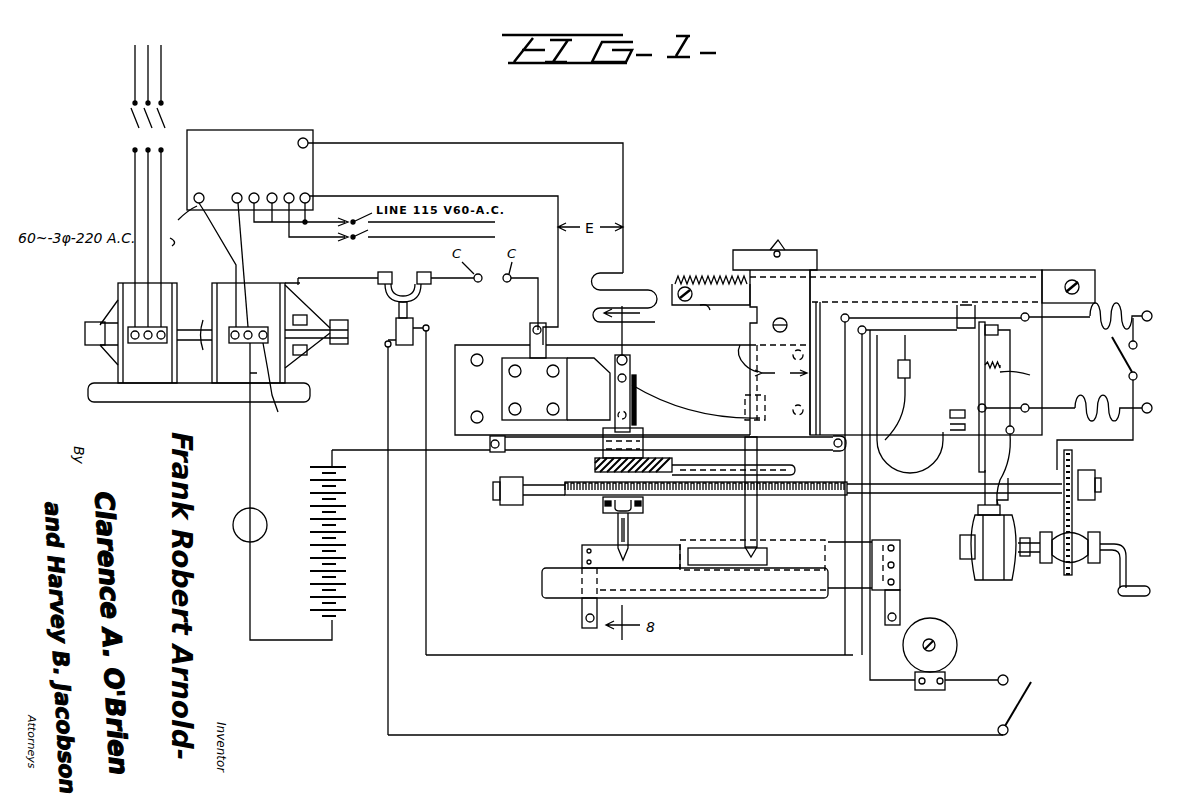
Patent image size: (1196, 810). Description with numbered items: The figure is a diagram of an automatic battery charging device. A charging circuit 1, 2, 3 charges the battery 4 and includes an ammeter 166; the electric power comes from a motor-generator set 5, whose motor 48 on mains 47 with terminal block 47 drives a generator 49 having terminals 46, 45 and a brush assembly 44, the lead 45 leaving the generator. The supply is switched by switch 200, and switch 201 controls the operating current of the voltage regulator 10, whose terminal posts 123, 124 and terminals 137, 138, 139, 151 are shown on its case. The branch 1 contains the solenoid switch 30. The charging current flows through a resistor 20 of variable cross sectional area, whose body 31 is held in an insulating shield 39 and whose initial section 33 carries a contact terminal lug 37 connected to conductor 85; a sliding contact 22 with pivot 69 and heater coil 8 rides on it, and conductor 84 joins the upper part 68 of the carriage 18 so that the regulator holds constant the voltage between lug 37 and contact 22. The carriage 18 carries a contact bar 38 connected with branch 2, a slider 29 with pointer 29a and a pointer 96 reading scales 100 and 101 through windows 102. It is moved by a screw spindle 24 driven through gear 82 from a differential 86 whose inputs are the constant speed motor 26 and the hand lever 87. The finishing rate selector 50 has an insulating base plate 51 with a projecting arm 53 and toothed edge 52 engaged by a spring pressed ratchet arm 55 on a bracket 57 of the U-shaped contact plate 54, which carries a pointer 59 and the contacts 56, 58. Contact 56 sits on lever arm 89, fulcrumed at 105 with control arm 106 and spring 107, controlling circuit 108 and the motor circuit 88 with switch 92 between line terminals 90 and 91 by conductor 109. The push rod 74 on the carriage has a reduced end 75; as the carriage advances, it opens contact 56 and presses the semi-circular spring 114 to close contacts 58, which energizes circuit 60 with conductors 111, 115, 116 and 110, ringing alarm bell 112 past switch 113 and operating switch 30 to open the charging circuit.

The charging circuit branch 1 is at (338, 272).
The charging circuit branch 2 is at (437, 450).
The charging circuit branch 3 is at (250, 500).
The battery 4 is at (345, 552).
The means for furnishing electric power 5 is at (212, 407).
The heating coil 8 is at (625, 314).
The voltage regulator 10 is at (238, 130).
The carriage 18 is at (585, 470).
The resistor with variable cross sectional area 20 is at (659, 393).
The sliding contact 22 is at (637, 378).
The screw spindle 24 is at (700, 497).
The synchronous or constant speed motor 26 is at (988, 578).
The slider 29 is at (600, 512).
The pointer 29a is at (614, 523).
The solenoid switch 30 is at (420, 307).
The variable area resistor 31 is at (668, 416).
The resistor section 33 is at (502, 392).
The contact terminal lug 37 is at (530, 338).
The contact bar 38 is at (495, 470).
The shield 39 is at (462, 350).
The generator brush assembly 44 is at (266, 300).
The terminal 45 is at (276, 388).
The terminal 46 is at (245, 346).
The mains 47 is at (152, 265).
The motor 48 is at (118, 283).
The generator 49 is at (225, 283).
The finishing rate selector 50 is at (866, 260).
The insulating base plate 51 is at (965, 285).
The toothed edge 52 is at (702, 280).
The projecting arm 53 is at (694, 320).
The U-shaped metal contact plate 54 is at (740, 345).
The spring pressed ratchet arm 55 is at (750, 250).
The contact 56 is at (978, 338).
The bracket 57 is at (784, 248).
The contacts 58 is at (950, 414).
The pointer 59 is at (760, 508).
The indicator or switching off circuit 60 is at (866, 732).
The upper part of the carriage 68 is at (628, 355).
The pivot 69 is at (615, 355).
The contact operating rod 74 is at (730, 497).
The reduced end portion 75 is at (790, 456).
The gear 82 is at (1075, 465).
The conductor 84 is at (625, 190).
The conductor 85 is at (452, 195).
The differential 86 is at (1058, 565).
The hand lever 87 is at (1128, 550).
The operative circuit of the motor 88 is at (1008, 462).
The lever arm 89 is at (979, 378).
The line terminal 90 is at (1152, 408).
The line terminal 91 is at (1152, 316).
The hand operated switch 92 is at (1114, 352).
The pointer 96 is at (630, 535).
The fixed scale 100 is at (584, 546).
The movable scale 101 is at (655, 592).
The windows 102 is at (727, 562).
The fulcrum 105 is at (980, 420).
The control arm 106 is at (982, 472).
The spring 107 is at (1000, 365).
The circuit 108 is at (1030, 375).
The flexible conductor 109 is at (1045, 412).
The flexible conductor 110 is at (1068, 277).
The conductor 111 is at (870, 525).
The alarm bell 112 is at (957, 652).
The switch 113 is at (1028, 700).
The semi-circular spring 114 is at (908, 404).
The conductor 115 is at (670, 736).
The conductor 116 is at (650, 656).
The terminal post 123 is at (213, 252).
The terminal post 124 is at (185, 218).
The regulator terminal 137 is at (244, 249).
The regulator terminal 138 is at (298, 210).
The regulator terminal 139 is at (300, 196).
The regulator terminal 151 is at (311, 198).
The ammeter 166 is at (255, 538).
The switch 200 is at (131, 124).
The switch 201 is at (356, 240).